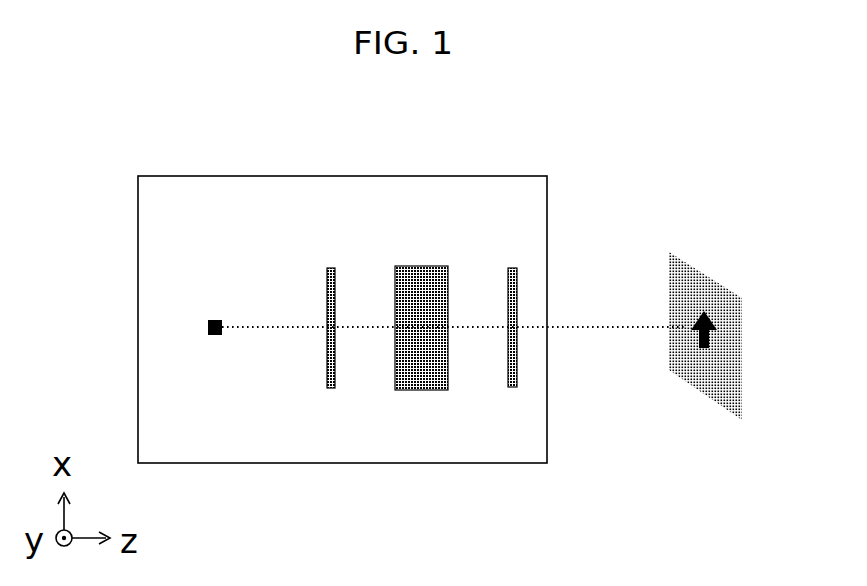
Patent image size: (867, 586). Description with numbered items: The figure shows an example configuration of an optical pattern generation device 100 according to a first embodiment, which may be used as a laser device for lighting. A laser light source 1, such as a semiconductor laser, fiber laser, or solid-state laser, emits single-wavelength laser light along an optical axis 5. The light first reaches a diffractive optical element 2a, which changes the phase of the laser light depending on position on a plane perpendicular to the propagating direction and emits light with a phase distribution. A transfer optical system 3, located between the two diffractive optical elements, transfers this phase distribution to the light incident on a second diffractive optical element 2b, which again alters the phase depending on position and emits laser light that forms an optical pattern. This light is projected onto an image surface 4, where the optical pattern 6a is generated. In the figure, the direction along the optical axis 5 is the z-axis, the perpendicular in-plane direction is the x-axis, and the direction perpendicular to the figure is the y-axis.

The optical pattern generation device 100 is at (377, 176).
The laser light source 1 is at (212, 320).
The diffractive optical element 2a is at (331, 268).
The diffractive optical element 2b is at (512, 268).
The transfer optical system 3 is at (448, 374).
The image surface 4 is at (730, 328).
The optical axis 5 is at (559, 327).
The optical pattern 6a is at (698, 346).